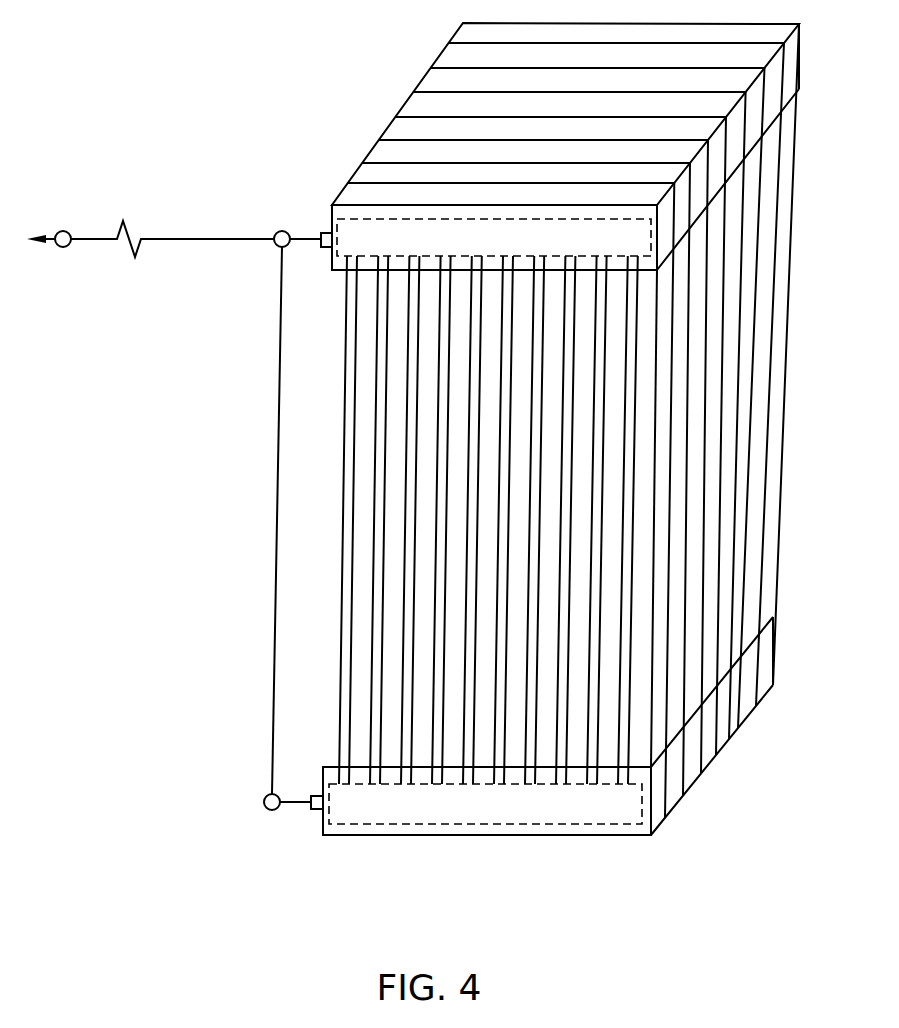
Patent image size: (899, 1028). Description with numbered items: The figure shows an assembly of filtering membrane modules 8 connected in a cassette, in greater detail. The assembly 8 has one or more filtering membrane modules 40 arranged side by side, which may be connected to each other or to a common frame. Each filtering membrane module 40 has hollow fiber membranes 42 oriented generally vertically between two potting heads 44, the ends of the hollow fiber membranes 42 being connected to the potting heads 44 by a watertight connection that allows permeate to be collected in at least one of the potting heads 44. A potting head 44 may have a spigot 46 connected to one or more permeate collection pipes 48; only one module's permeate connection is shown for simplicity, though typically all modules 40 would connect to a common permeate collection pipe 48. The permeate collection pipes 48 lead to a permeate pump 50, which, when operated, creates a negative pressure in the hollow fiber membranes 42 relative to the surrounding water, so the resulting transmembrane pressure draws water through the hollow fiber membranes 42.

The assembly of filtering membrane modules 8 is at (290, 78).
The filtering membrane module 40 is at (373, 193).
The hollow fiber membranes 42 is at (345, 492).
The potting head 44 is at (362, 230).
The spigot 46 is at (322, 233).
The permeate collection pipe 48 is at (222, 238).
The permeate pump 50 is at (63, 230).